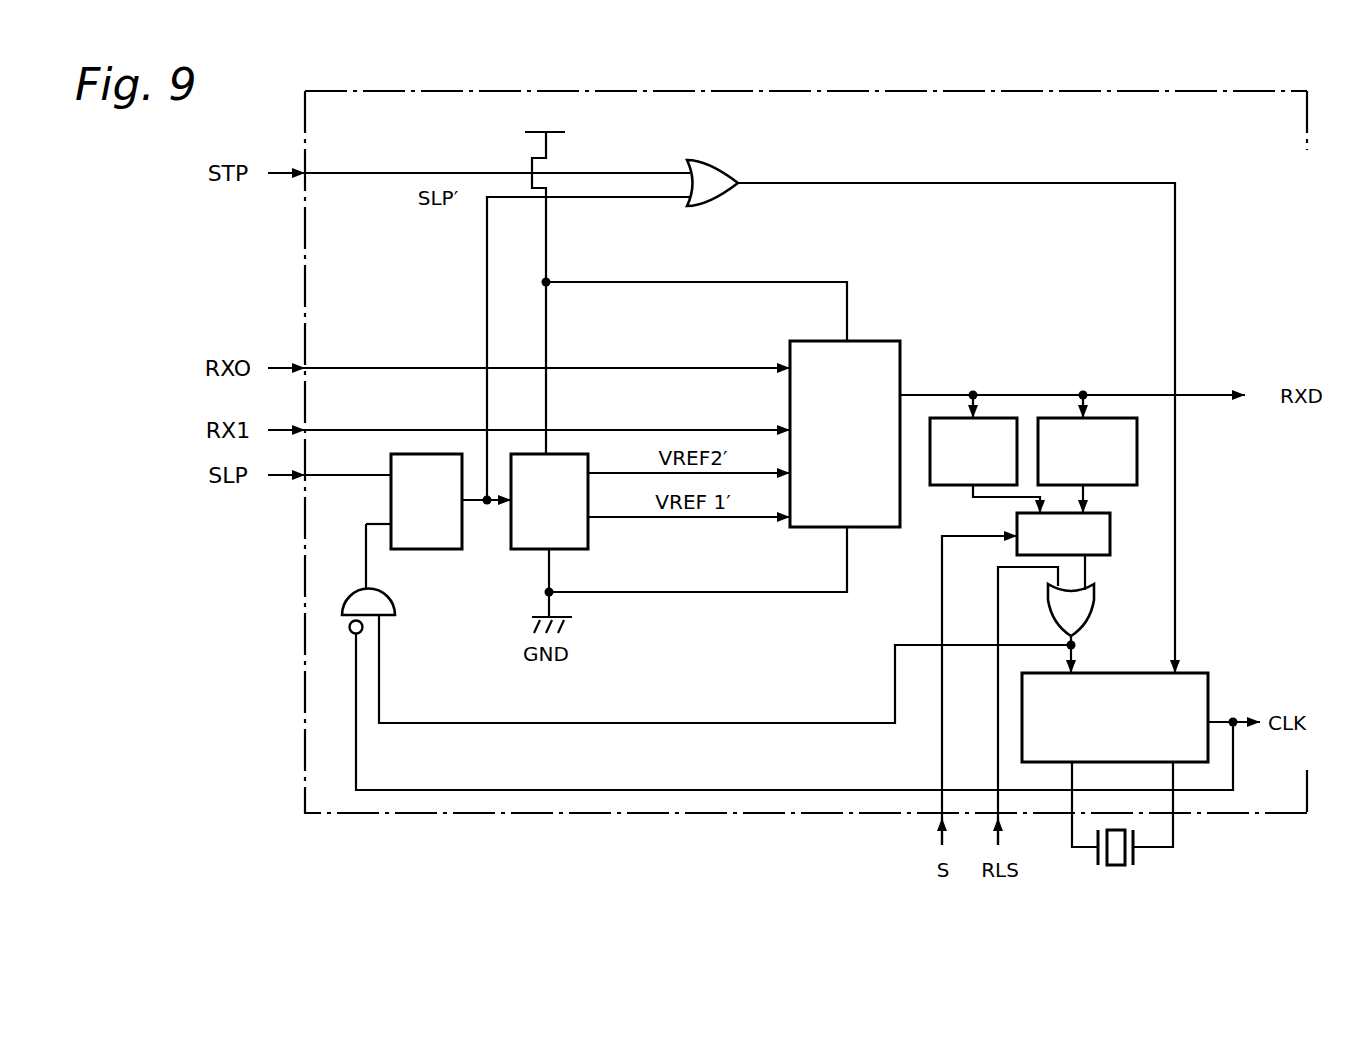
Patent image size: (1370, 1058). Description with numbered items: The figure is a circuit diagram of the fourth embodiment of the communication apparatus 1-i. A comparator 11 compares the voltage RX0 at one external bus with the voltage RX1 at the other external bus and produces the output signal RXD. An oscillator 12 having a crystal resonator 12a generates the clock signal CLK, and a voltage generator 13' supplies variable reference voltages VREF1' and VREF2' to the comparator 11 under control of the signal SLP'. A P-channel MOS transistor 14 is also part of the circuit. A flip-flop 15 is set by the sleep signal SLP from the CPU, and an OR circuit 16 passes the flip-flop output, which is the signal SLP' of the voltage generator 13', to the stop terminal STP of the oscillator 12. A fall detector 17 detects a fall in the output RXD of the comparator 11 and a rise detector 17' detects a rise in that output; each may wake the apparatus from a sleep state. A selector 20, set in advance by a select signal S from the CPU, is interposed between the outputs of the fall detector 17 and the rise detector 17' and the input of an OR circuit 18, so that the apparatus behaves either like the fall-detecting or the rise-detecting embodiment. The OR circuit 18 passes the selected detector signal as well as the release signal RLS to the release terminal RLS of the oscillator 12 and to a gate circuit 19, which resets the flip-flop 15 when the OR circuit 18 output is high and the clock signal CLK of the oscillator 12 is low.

The communication apparatus 1-i is at (947, 91).
The comparator 11 is at (888, 341).
The oscillator 12 is at (1190, 672).
The crystal resonator 12a is at (1116, 826).
The voltage generator 13' is at (582, 506).
The P-channel MOS transistor 14 is at (540, 175).
The flip-flop 15 is at (426, 549).
The OR circuit 16 is at (712, 160).
The fall detector 17 is at (976, 411).
The rise detector 17' is at (1088, 412).
The OR circuit 18 is at (1086, 618).
The gate circuit 19 is at (395, 617).
The selector 20 is at (1110, 542).